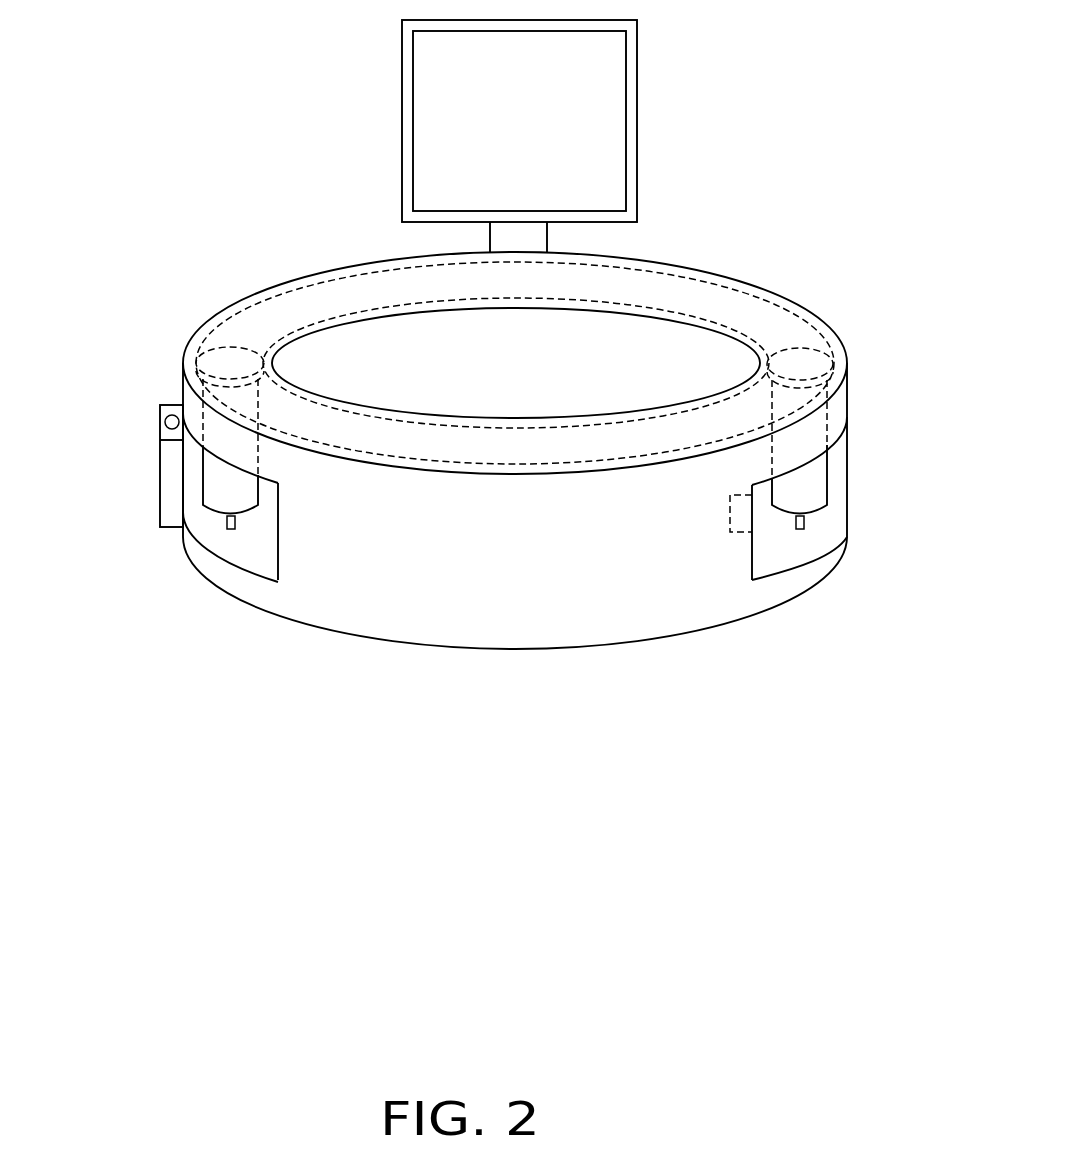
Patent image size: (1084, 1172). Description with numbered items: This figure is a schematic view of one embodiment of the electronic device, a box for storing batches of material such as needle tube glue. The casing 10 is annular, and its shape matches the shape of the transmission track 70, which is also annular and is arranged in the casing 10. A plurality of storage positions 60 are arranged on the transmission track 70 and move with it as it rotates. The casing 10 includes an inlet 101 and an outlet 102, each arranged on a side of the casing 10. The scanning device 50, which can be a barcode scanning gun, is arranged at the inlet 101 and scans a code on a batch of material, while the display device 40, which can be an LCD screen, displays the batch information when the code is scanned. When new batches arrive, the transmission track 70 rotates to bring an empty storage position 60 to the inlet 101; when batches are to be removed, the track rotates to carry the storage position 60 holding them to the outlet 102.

The casing 10 is at (755, 283).
The display device 40 is at (607, 80).
The scanning device 50 is at (170, 459).
The storage position 60 is at (228, 362).
The transmission track 70 is at (250, 305).
The inlet 101 is at (245, 544).
The outlet 102 is at (837, 473).